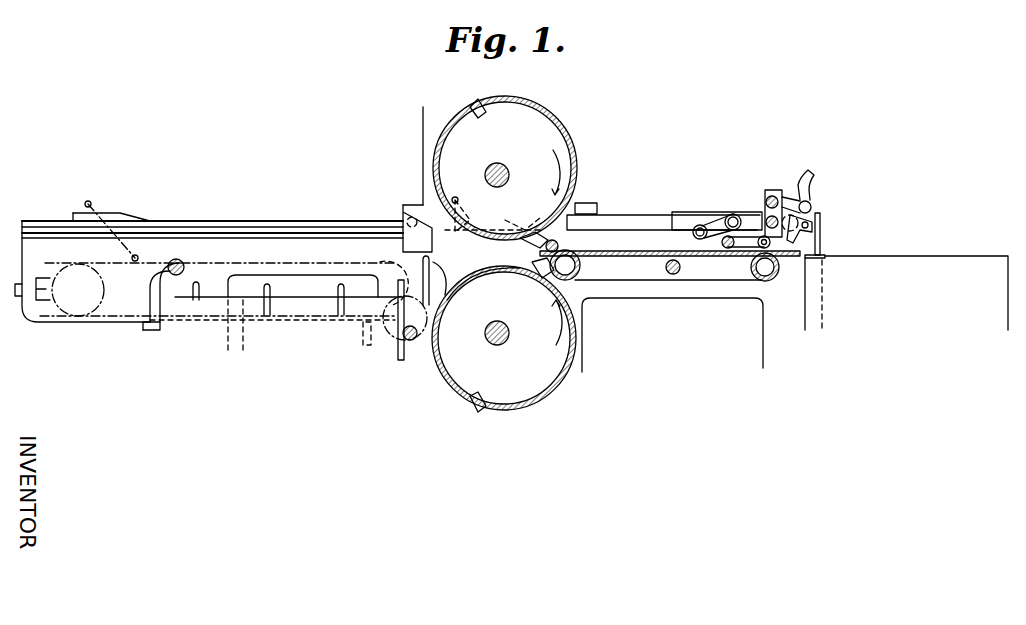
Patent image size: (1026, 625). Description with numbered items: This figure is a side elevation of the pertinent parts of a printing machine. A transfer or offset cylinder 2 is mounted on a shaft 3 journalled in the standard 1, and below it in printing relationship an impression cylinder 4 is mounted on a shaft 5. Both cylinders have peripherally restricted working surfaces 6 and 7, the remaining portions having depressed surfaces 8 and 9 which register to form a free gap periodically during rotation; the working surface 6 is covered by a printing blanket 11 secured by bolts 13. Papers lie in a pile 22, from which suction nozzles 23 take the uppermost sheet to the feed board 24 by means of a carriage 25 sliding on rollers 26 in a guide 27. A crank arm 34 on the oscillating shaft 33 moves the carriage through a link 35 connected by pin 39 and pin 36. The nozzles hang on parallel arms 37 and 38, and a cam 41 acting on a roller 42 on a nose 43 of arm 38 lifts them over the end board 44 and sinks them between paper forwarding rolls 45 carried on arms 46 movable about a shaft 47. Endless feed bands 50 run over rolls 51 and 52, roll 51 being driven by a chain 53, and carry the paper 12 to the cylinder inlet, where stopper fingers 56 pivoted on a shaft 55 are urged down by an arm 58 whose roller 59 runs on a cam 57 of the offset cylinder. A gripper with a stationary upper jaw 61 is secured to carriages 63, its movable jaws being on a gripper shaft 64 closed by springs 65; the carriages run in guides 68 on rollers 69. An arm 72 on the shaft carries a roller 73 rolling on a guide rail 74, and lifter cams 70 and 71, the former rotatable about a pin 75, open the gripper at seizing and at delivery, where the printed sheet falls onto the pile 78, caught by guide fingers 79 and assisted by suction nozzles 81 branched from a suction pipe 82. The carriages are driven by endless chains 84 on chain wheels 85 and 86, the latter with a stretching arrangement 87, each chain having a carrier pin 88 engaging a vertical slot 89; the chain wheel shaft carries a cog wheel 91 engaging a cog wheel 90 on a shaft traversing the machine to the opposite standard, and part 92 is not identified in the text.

The standard 1 is at (423, 130).
The transfer or offset cylinder 2 is at (568, 170).
The shaft 3 is at (502, 164).
The impression cylinder 4 is at (488, 404).
The shaft 5 is at (492, 337).
The working surface 6 is at (554, 120).
The impression surface 7 is at (552, 386).
The depressed surface 8 is at (437, 150).
The depressed surface 9 is at (447, 378).
The printing blanket 11 is at (533, 103).
The paper 12 is at (606, 250).
The bolts 13 is at (473, 105).
The pile 22 is at (930, 256).
The suction nozzles 23 is at (760, 225).
The feed board 24 is at (717, 262).
The carriage 25 is at (742, 214).
The rollers 26 is at (726, 217).
The guide 27 is at (672, 214).
The shaft 33 is at (684, 262).
The crank arm 34 is at (676, 236).
The link 35 is at (705, 228).
The pin 36 is at (730, 214).
The arm 37 is at (800, 190).
The arm 38 is at (812, 200).
The pin 39 is at (675, 275).
The cam 41 is at (800, 268).
The roller 42 is at (822, 257).
The nose 43 is at (820, 240).
The end board 44 is at (810, 262).
The paper forwarding rolls 45 is at (768, 283).
The arms 46 is at (745, 262).
The shaft 47 is at (728, 262).
The endless feed bands 50 is at (650, 282).
The roll 51 is at (581, 265).
The roll 52 is at (758, 262).
The chain 53 is at (584, 299).
The shaft 55 is at (558, 247).
The stopper fingers 56 is at (552, 235).
The cam 57 is at (583, 203).
The arm 58 is at (590, 222).
The roller 59 is at (522, 209).
The upper jaw 61 is at (530, 275).
The carriages 63 is at (410, 215).
The gripper shaft 64 is at (512, 262).
The springs 65 is at (496, 262).
The guides 68 is at (275, 226).
The rollers 69 is at (528, 240).
The lifter cam 70 is at (433, 218).
The lifter cam 71 is at (113, 212).
The arm 72 is at (132, 222).
The roller 73 is at (88, 202).
The guide rail 74 is at (370, 222).
The pin 75 is at (492, 206).
The pile 78 is at (165, 332).
The guide fingers 79 is at (180, 262).
The suction nozzles 81 is at (198, 290).
The suction pipe 82 is at (276, 328).
The endless chains 84 is at (110, 323).
The chain wheel 85 is at (388, 266).
The chain wheel 86 is at (76, 305).
The stretching arrangement 87 is at (43, 278).
The carrier pin 88 is at (425, 268).
The vertical slot 89 is at (446, 264).
The cog wheel 90 is at (408, 362).
The cog wheel 91 is at (393, 273).
The bar 92 is at (405, 342).